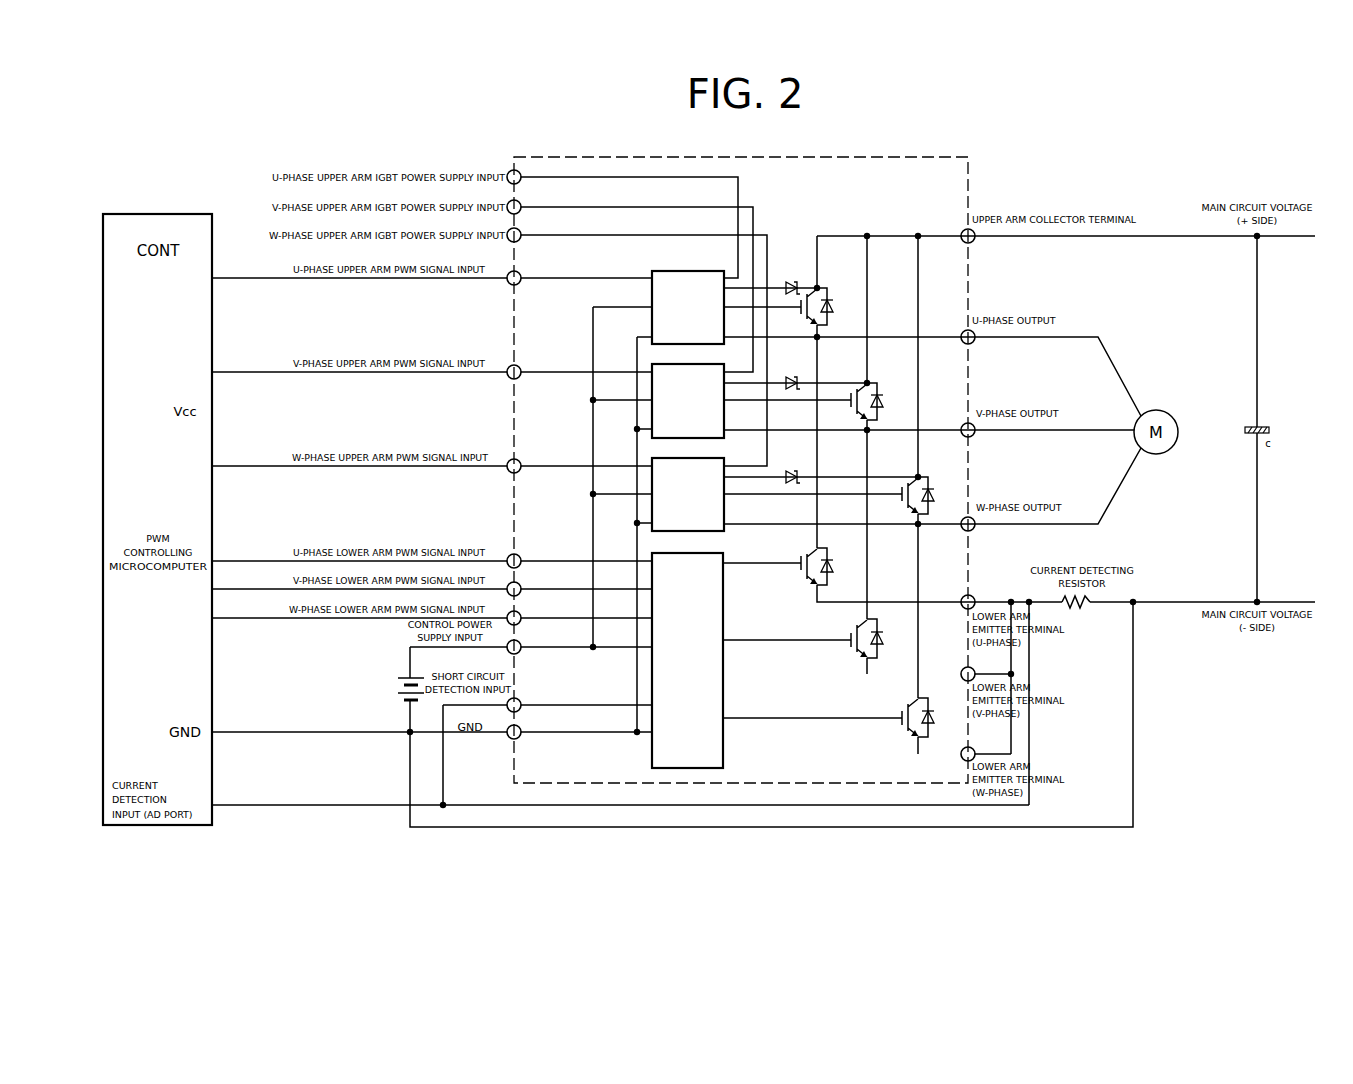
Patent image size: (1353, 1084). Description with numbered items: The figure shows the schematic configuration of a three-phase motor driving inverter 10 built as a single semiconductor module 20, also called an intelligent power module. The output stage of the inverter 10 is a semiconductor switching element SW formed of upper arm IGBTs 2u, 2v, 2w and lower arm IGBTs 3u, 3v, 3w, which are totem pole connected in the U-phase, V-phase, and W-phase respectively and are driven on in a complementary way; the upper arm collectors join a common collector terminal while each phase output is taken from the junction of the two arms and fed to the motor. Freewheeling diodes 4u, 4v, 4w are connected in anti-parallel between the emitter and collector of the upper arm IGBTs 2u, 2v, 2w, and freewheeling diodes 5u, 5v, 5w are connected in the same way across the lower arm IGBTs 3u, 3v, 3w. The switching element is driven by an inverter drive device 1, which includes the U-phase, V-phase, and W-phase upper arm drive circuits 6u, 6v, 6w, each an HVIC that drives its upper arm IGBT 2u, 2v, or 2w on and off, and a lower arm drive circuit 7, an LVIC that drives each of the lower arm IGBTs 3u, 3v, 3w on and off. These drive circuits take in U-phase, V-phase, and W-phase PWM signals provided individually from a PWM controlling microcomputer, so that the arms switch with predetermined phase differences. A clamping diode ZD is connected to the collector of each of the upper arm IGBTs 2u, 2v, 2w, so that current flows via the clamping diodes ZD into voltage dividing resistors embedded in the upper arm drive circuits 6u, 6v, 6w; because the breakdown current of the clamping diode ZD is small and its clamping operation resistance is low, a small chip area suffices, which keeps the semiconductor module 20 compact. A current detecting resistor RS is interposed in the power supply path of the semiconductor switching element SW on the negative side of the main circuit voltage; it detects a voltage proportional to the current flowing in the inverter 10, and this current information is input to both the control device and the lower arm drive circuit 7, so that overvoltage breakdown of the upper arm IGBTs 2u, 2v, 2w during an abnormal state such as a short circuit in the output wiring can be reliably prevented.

The semiconductor module 20 is at (938, 186).
The inverter drive device 1 is at (503, 833).
The inverter 10 is at (405, 880).
The upper arm IGBT 2u is at (817, 288).
The upper arm IGBT 2v is at (867, 383).
The upper arm IGBT 2w is at (918, 477).
The lower arm IGBT 3u is at (802, 556).
The lower arm IGBT 3v is at (852, 632).
The lower arm IGBT 3w is at (903, 710).
The freewheeling diode 4u is at (836, 306).
The freewheeling diode 4v is at (886, 401).
The freewheeling diode 4w is at (938, 495).
The freewheeling diode 5u is at (836, 566).
The freewheeling diode 5v is at (886, 638).
The freewheeling diode 5w is at (938, 717).
The upper arm drive circuit 6u is at (652, 326).
The upper arm drive circuit 6v is at (652, 419).
The upper arm drive circuit 6w is at (652, 514).
The lower arm drive circuit 7 is at (652, 686).
The semiconductor switching element SW is at (893, 266).
The clamping diode ZD is at (821, 374).
The current detecting resistor RS is at (1083, 613).